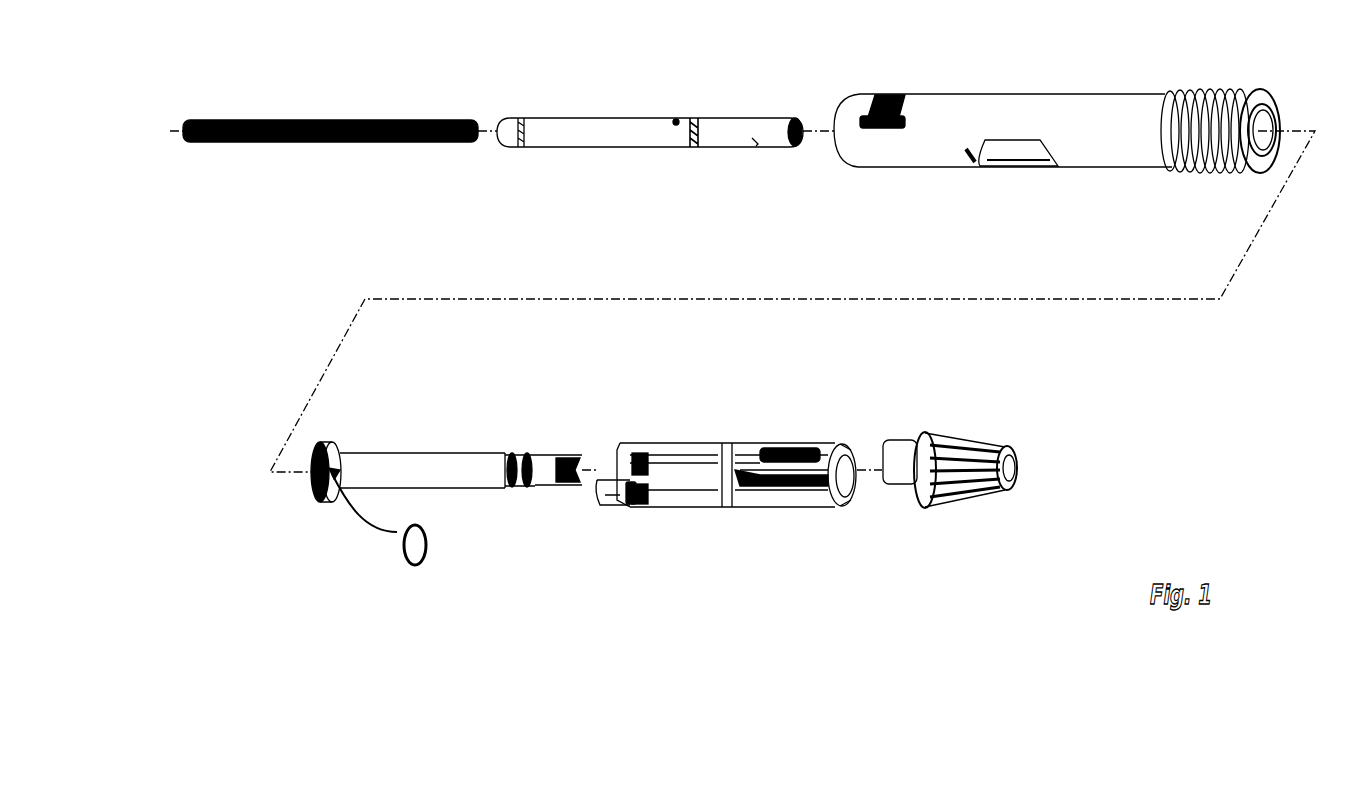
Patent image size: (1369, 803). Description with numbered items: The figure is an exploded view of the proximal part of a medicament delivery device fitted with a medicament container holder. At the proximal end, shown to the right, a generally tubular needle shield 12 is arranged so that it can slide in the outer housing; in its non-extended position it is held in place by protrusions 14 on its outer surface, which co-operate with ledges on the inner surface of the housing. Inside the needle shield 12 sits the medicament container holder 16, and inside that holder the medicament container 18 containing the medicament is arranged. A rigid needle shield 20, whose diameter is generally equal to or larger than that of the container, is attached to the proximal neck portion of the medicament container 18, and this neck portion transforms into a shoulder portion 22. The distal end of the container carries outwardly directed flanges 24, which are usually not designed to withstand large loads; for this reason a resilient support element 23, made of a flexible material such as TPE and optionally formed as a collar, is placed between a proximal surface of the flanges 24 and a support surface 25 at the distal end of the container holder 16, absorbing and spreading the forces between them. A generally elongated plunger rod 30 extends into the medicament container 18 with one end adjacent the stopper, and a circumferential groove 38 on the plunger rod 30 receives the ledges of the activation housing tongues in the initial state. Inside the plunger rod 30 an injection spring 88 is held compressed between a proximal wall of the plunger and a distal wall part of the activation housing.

The needle shield 12 is at (1117, 105).
The protrusions 14 is at (875, 95).
The medicament container holder 16 is at (760, 435).
The medicament container 18 is at (448, 462).
The rigid needle shield 20 is at (548, 488).
The shoulder portion 22 is at (504, 478).
The resilient support element 23 is at (410, 562).
The flanges 24 is at (320, 445).
The support surface 25 is at (628, 482).
The plunger rod 30 is at (610, 120).
The circumferential groove 38 is at (692, 120).
The injection spring 88 is at (387, 121).